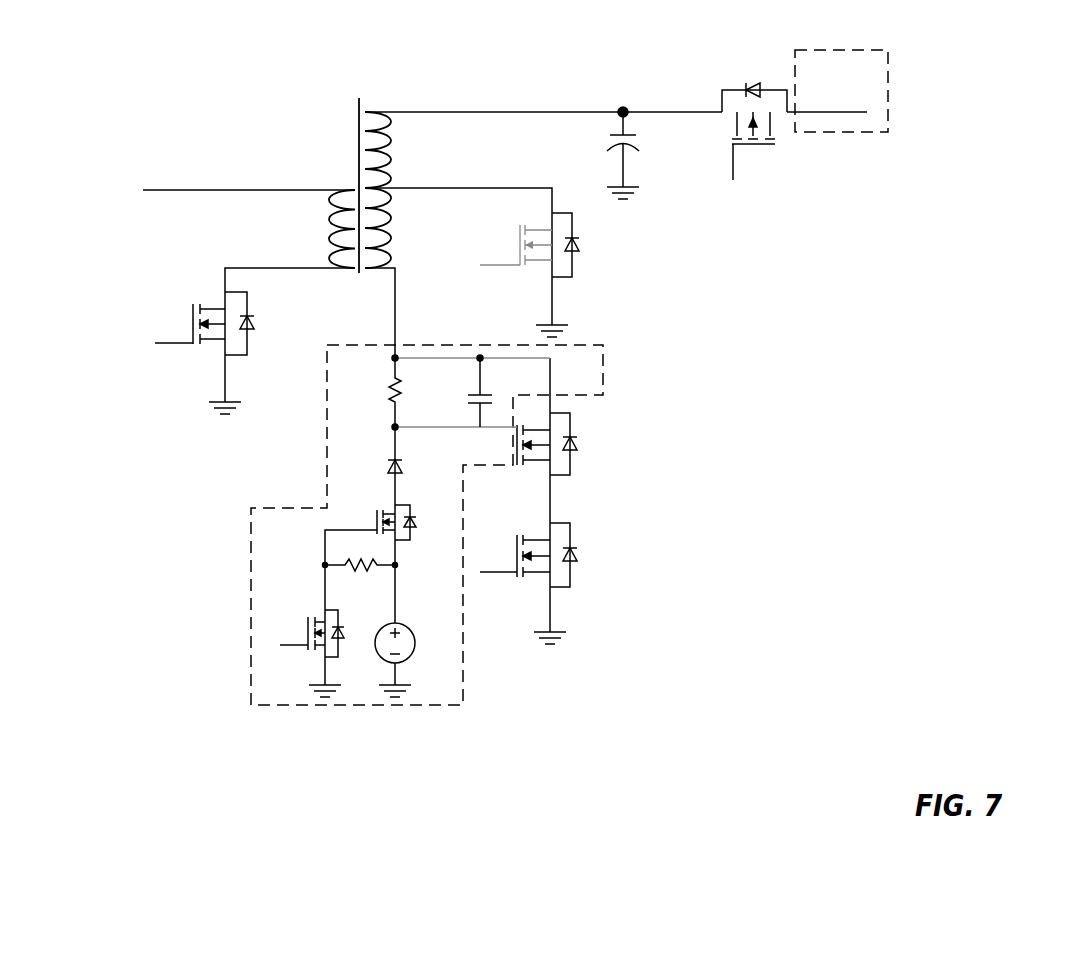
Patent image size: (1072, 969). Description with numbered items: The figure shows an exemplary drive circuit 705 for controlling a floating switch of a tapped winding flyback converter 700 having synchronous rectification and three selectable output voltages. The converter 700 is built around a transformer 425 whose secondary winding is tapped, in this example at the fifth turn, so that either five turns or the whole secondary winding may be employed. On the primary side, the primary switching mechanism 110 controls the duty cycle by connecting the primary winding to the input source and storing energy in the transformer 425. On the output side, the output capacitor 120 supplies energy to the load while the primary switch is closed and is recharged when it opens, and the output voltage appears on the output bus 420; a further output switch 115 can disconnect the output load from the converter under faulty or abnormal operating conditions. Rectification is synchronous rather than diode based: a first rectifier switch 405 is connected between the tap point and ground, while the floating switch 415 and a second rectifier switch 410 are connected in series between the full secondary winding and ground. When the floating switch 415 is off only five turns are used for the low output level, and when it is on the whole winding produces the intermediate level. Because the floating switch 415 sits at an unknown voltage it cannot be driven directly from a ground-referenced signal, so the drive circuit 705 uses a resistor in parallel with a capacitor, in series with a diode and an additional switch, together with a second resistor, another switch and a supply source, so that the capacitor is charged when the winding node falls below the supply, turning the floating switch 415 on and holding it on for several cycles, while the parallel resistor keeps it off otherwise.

The tapped winding flyback converter 700 is at (136, 66).
The transformer 425 is at (343, 155).
The primary switching mechanism Q0 110 is at (186, 288).
The output capacitor 120 is at (609, 156).
The switch Q9 115 is at (770, 190).
The Vbus 420 is at (900, 56).
The switch Q1 405 is at (615, 266).
The switch Q3 415 is at (609, 463).
The switch Q2 410 is at (617, 583).
The drive circuit 705 is at (266, 720).